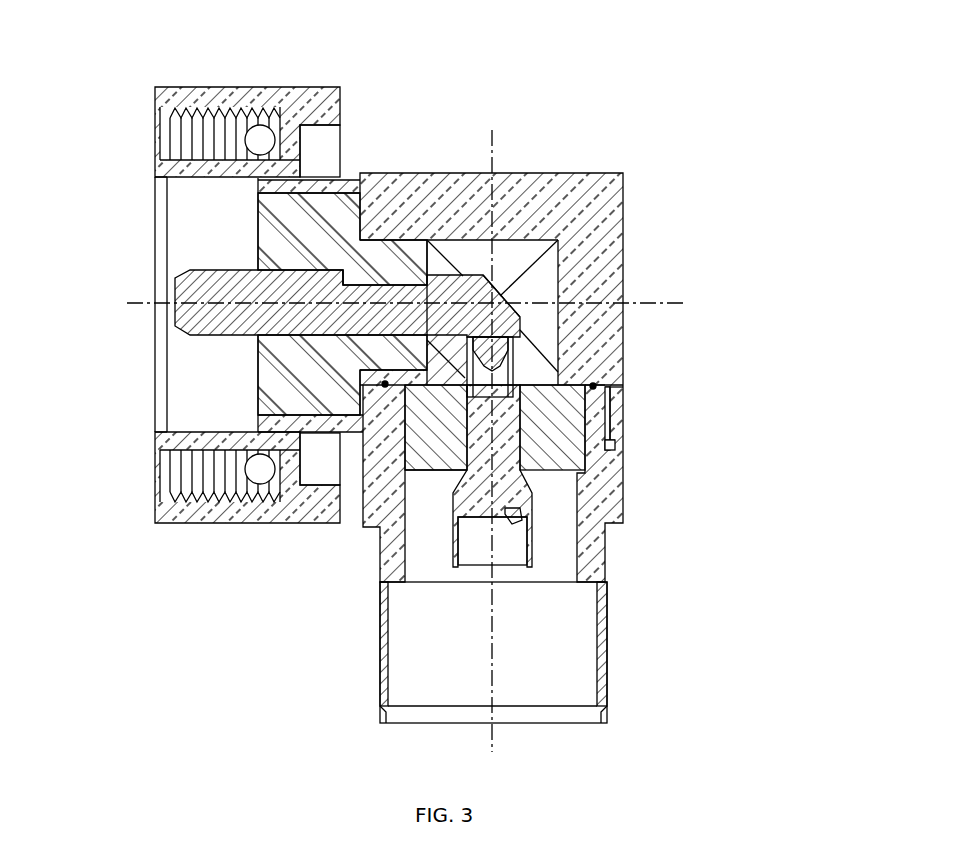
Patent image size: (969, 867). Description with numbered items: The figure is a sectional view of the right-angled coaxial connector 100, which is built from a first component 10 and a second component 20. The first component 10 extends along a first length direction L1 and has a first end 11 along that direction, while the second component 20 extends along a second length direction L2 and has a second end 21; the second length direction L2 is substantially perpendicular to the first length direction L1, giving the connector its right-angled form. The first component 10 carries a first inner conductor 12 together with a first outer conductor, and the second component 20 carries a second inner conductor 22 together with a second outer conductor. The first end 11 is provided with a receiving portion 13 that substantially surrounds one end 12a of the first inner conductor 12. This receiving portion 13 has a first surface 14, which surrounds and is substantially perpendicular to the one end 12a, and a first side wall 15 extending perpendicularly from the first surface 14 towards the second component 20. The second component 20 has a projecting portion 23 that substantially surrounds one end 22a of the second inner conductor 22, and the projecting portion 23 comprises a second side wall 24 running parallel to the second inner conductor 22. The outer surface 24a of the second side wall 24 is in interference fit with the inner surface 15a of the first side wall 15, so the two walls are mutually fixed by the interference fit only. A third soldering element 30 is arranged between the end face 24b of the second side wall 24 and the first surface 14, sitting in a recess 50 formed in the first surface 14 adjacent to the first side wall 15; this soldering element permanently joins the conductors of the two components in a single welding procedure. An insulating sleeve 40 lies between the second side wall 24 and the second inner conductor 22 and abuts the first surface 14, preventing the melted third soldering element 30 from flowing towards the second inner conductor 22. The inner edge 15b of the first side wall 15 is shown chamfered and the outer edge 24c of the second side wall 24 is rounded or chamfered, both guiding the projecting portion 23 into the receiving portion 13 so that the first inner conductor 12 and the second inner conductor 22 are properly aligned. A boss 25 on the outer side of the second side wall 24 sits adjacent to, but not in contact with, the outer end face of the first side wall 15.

The right-angled coaxial connector 100 is at (696, 110).
The first component 10 is at (413, 90).
The first end 11 is at (610, 308).
The first inner conductor 12 is at (318, 293).
The one end of the first inner conductor 12a is at (590, 248).
The receiving portion 13 is at (742, 317).
The first surface 14 is at (612, 366).
The first side wall 15 is at (615, 410).
The inner surface of the first side wall 15a is at (622, 417).
The inner edge of the first side wall 15b is at (352, 437).
The second component 20 is at (630, 605).
The second end 21 is at (535, 440).
The second inner conductor 22 is at (530, 520).
The one end of the second inner conductor 22a is at (540, 468).
The projecting portion 23 is at (620, 433).
The second side wall 24 is at (390, 386).
The outer surface of the second side wall 24a is at (622, 417).
The end face of the second side wall 24b is at (383, 386).
The outer edge of the second side wall 24c is at (330, 395).
The boss 25 is at (622, 448).
The third soldering element 30 is at (383, 384).
The insulating sleeve 40 is at (430, 437).
The recess 50 is at (394, 392).
The first length direction L1 is at (138, 303).
The second length direction L2 is at (495, 655).